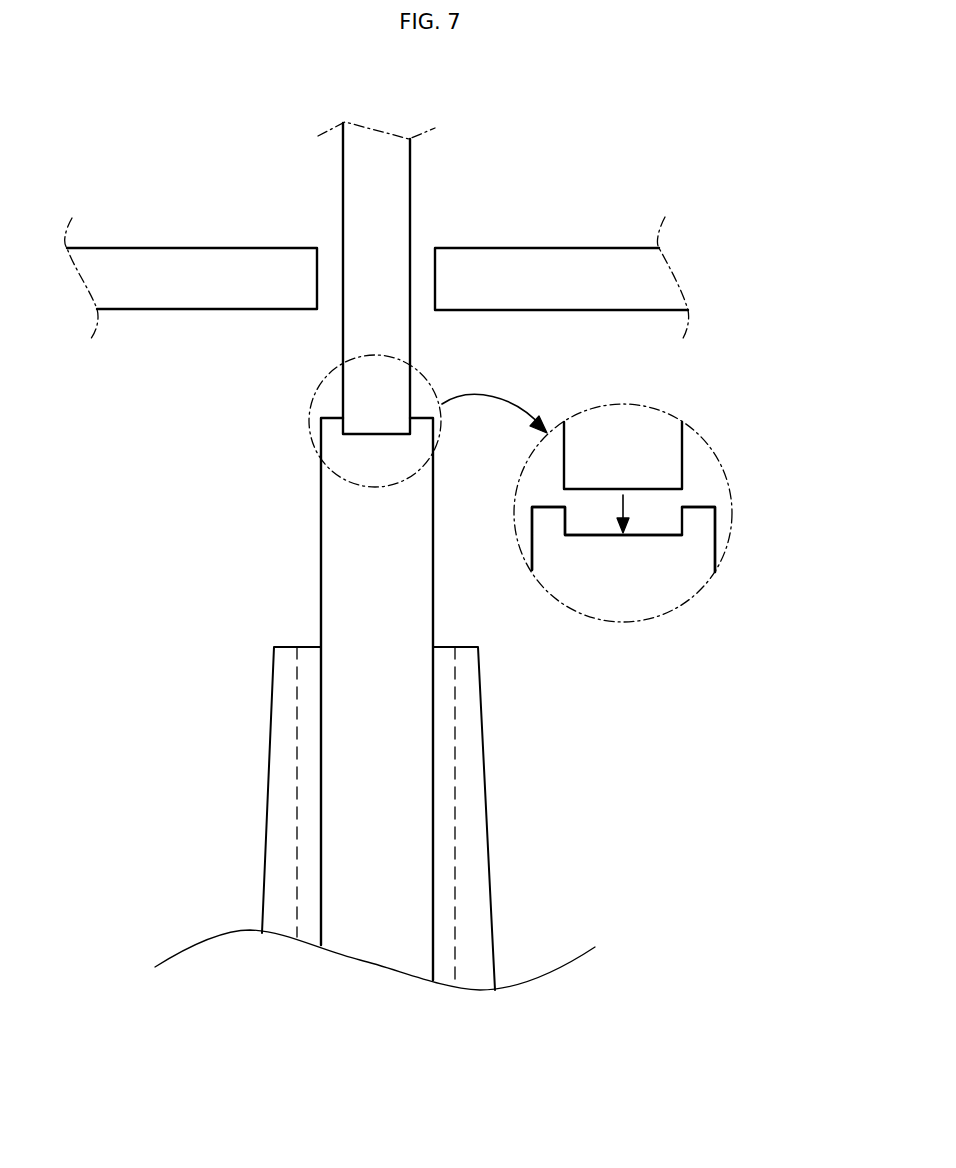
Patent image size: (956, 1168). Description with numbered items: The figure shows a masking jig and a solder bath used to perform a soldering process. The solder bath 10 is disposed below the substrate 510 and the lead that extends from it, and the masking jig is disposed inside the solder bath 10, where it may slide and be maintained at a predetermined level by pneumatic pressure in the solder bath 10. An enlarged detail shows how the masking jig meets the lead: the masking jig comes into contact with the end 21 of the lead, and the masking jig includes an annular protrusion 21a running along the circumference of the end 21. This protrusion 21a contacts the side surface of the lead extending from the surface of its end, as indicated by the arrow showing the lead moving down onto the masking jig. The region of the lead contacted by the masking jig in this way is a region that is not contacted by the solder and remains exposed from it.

The solder bath 10 is at (268, 794).
The end 21 is at (650, 532).
The annular protrusion 21a is at (706, 514).
The substrate 510 is at (193, 278).